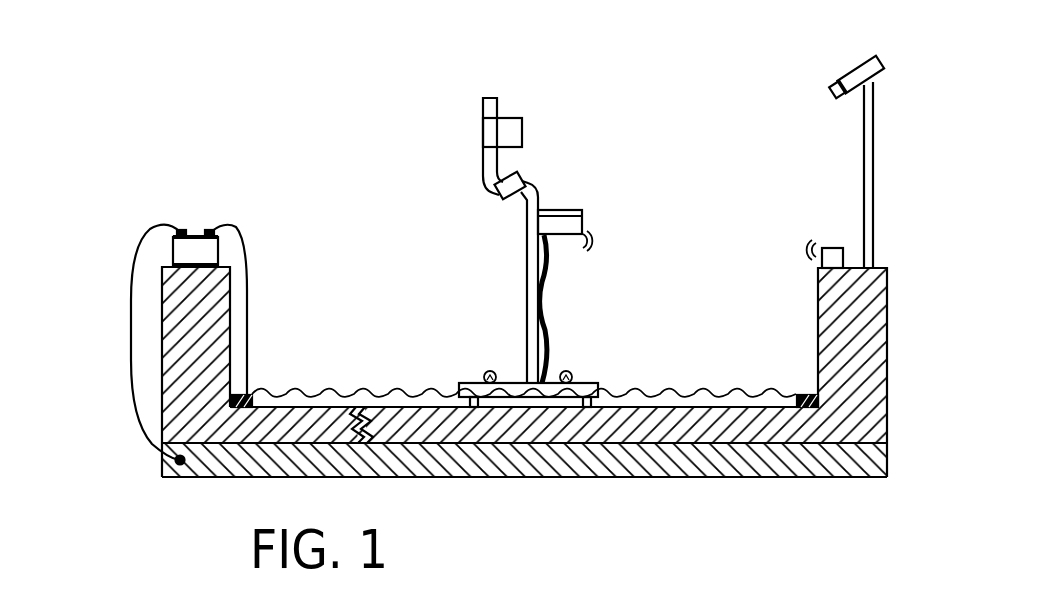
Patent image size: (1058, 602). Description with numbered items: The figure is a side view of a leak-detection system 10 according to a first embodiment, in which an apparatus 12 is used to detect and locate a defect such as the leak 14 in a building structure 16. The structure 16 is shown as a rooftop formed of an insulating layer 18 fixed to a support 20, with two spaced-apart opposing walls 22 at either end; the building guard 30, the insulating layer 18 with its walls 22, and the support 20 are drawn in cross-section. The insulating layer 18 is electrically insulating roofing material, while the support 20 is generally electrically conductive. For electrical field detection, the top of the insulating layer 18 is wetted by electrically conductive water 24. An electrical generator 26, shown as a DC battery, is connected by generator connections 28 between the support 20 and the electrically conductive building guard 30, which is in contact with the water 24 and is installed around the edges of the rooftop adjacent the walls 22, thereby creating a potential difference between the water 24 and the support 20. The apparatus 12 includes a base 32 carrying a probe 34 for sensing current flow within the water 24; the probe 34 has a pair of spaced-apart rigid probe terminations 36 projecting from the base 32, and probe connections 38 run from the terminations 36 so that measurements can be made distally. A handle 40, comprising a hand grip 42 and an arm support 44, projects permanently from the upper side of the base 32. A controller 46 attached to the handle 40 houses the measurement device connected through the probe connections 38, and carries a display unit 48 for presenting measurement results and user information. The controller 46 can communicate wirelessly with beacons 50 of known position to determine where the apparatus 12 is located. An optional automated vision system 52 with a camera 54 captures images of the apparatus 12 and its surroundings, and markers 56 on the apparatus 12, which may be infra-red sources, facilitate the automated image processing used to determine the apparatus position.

The system 10 is at (143, 56).
The apparatus 12 is at (411, 200).
The leak 14 is at (363, 396).
The building structure 16 is at (895, 295).
The insulating layer 18 is at (688, 428).
The support 20 is at (632, 462).
The walls 22 is at (198, 354).
The water 24 is at (718, 402).
The electrical generator 26 is at (191, 244).
The generator connections 28 is at (138, 256).
The building guard 30 is at (250, 393).
The base 32 is at (519, 388).
The probe 34 is at (630, 273).
The probe terminations 36 is at (457, 403).
The probe connections 38 is at (548, 322).
The handle 40 is at (528, 270).
The hand grip 42 is at (516, 178).
The arm support 44 is at (518, 133).
The controller 46 is at (572, 228).
The display unit 48 is at (573, 208).
The beacons 50 is at (838, 250).
The automated vision system 52 is at (780, 81).
The camera 54 is at (860, 75).
The markers 56 is at (486, 372).